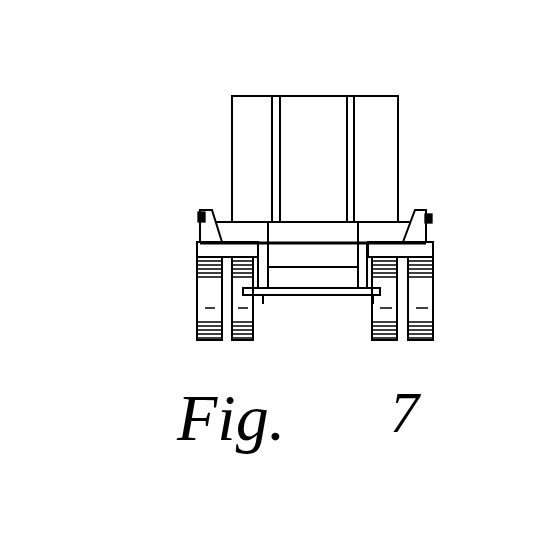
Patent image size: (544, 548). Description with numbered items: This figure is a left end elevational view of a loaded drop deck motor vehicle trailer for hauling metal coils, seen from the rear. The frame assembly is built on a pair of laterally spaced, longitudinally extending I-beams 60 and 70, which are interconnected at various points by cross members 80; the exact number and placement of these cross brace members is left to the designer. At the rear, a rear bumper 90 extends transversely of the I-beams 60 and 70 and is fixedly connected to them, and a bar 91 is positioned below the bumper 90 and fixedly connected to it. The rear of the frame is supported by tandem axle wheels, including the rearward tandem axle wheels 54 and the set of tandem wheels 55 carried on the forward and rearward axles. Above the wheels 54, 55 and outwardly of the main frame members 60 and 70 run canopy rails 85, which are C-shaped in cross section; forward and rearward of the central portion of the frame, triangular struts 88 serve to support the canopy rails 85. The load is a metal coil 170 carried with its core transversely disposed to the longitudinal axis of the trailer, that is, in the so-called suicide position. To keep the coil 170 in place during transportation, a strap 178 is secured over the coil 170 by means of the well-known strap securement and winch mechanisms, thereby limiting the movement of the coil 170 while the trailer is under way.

The coil 170 is at (398, 130).
The strap 178 is at (358, 123).
The triangular strut 88 is at (213, 234).
The canopy rail 85 is at (205, 210).
The rear bumper 90 is at (420, 250).
The cross member 80 is at (310, 258).
The I-beam 70 is at (363, 263).
The bar 91 is at (316, 296).
The I-beam 60 is at (257, 270).
The tandem wheels 55 is at (210, 342).
The rearward tandem axle wheels 54 is at (423, 343).